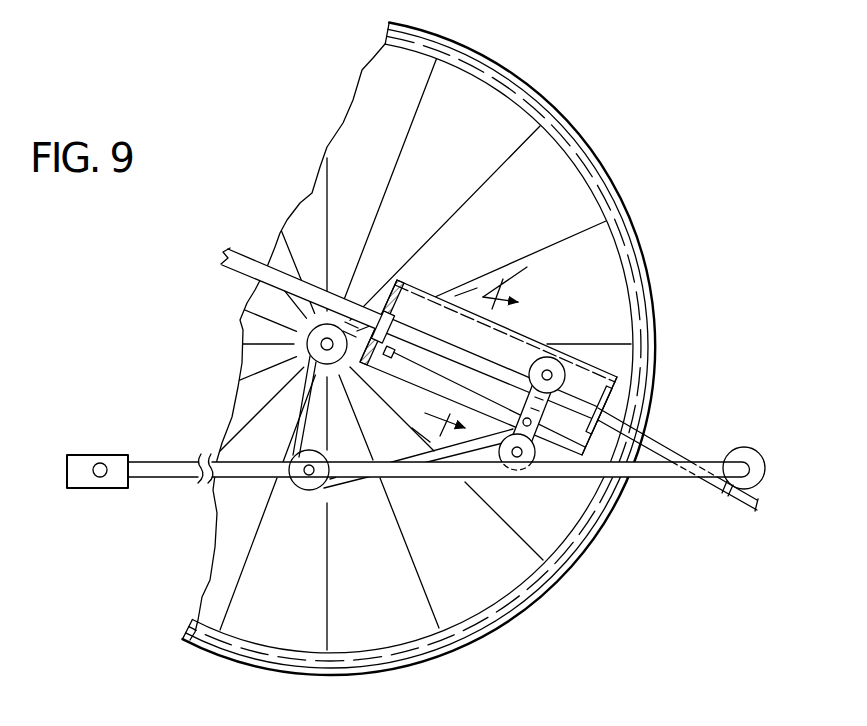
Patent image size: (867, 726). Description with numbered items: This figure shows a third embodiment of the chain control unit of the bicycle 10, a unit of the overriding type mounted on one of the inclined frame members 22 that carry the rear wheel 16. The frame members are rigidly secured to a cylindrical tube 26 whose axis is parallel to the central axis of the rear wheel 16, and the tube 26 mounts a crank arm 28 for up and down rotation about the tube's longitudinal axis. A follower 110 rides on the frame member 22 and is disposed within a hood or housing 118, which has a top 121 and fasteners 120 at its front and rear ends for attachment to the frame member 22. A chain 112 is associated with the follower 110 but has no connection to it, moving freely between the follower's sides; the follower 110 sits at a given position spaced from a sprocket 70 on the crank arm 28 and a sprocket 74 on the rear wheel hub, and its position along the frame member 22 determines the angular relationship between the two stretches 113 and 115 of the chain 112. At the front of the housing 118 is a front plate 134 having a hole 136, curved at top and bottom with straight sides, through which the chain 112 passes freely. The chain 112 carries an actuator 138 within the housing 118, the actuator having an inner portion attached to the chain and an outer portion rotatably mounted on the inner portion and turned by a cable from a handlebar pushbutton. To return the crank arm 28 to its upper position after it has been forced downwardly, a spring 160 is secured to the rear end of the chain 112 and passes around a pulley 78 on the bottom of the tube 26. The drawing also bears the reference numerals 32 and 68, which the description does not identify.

The bicycle 10 is at (455, 352).
The rear wheel 16 is at (630, 220).
The inclined frame member 22 is at (243, 247).
The cylindrical tube 26 is at (766, 468).
The crank arm 28 is at (163, 472).
The end block 32 is at (82, 478).
The collar 68 is at (732, 496).
The sprocket 70 is at (309, 489).
The sprocket 74 is at (311, 338).
The pulley 78 is at (757, 514).
The follower 110 is at (583, 368).
The chain 112 is at (334, 490).
The stretch of chain 113 is at (433, 481).
The stretch of chain 115 is at (245, 400).
The hood or housing 118 is at (550, 343).
The fastener 120 is at (399, 323).
The top 121 is at (513, 332).
The front plate 134 is at (393, 296).
The hole 136 is at (380, 313).
The actuator 138 is at (390, 358).
The spring 160 is at (643, 447).